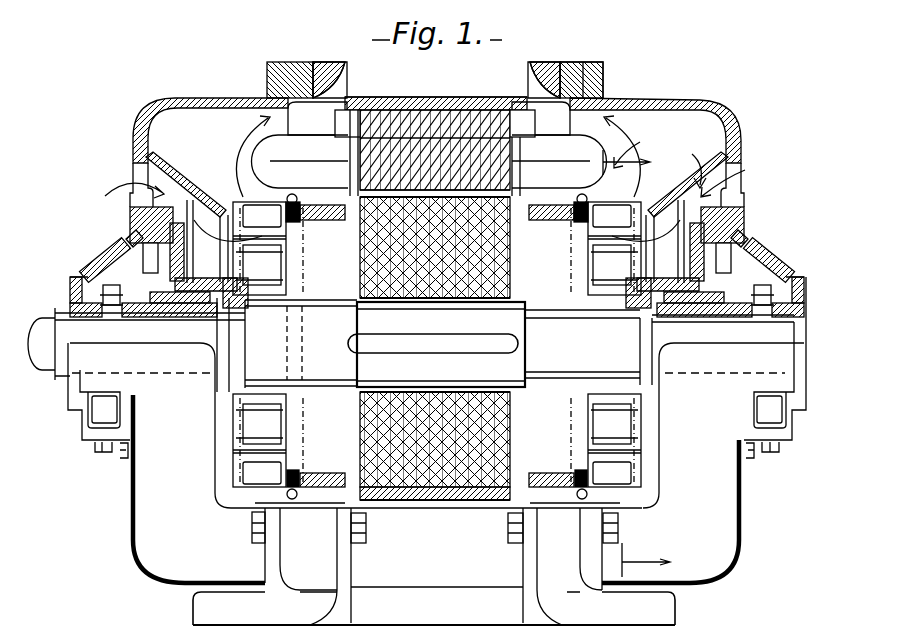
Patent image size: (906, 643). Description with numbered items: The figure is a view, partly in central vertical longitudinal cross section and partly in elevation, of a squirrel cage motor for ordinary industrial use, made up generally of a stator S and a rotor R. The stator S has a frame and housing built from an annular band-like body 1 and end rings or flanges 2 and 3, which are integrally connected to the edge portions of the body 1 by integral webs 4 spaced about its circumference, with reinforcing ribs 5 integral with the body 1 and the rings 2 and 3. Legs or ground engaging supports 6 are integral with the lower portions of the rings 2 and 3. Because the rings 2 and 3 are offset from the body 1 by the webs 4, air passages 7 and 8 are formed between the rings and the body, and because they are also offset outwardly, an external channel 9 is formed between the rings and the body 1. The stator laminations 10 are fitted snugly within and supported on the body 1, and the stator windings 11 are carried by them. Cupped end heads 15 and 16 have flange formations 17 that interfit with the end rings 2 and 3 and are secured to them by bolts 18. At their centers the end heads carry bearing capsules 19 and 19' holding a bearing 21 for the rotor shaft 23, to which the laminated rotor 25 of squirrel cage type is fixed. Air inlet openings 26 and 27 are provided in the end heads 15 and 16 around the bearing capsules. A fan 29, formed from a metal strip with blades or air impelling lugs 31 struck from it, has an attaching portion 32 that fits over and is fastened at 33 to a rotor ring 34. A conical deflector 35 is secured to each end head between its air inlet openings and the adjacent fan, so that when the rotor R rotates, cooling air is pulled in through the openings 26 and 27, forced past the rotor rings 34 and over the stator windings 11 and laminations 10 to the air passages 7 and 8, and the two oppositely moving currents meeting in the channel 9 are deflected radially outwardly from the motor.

The annular band-like body 1 is at (428, 100).
The end ring 2 is at (300, 96).
The end ring 3 is at (588, 62).
The integral web 4 is at (298, 110).
The reinforcing rib 5 is at (392, 96).
The leg 6 is at (434, 611).
The air passage 7 is at (342, 95).
The air passage 8 is at (530, 90).
The external channel 9 is at (478, 96).
The stator laminations 10 is at (516, 166).
The stator windings 11 is at (644, 144).
The end head 15 is at (243, 98).
The end head 16 is at (705, 100).
The flange formation 17 is at (270, 62).
The bolt 18 is at (252, 530).
The bearing capsule 19 is at (106, 262).
The bearing capsule 19' is at (771, 262).
The bearing 21 is at (140, 312).
The rotor shaft 23 is at (411, 345).
The laminated rotor 25 is at (408, 392).
The air inlet opening 26 is at (133, 172).
The air inlet opening 27 is at (745, 170).
The fan 29 is at (243, 197).
The blade 31 is at (590, 240).
The attaching portion 32 is at (572, 495).
The fastening 33 is at (590, 202).
The rotor ring 34 is at (299, 268).
The conical deflector 35 is at (692, 159).
The rotor R is at (478, 305).
The stator S is at (575, 62).